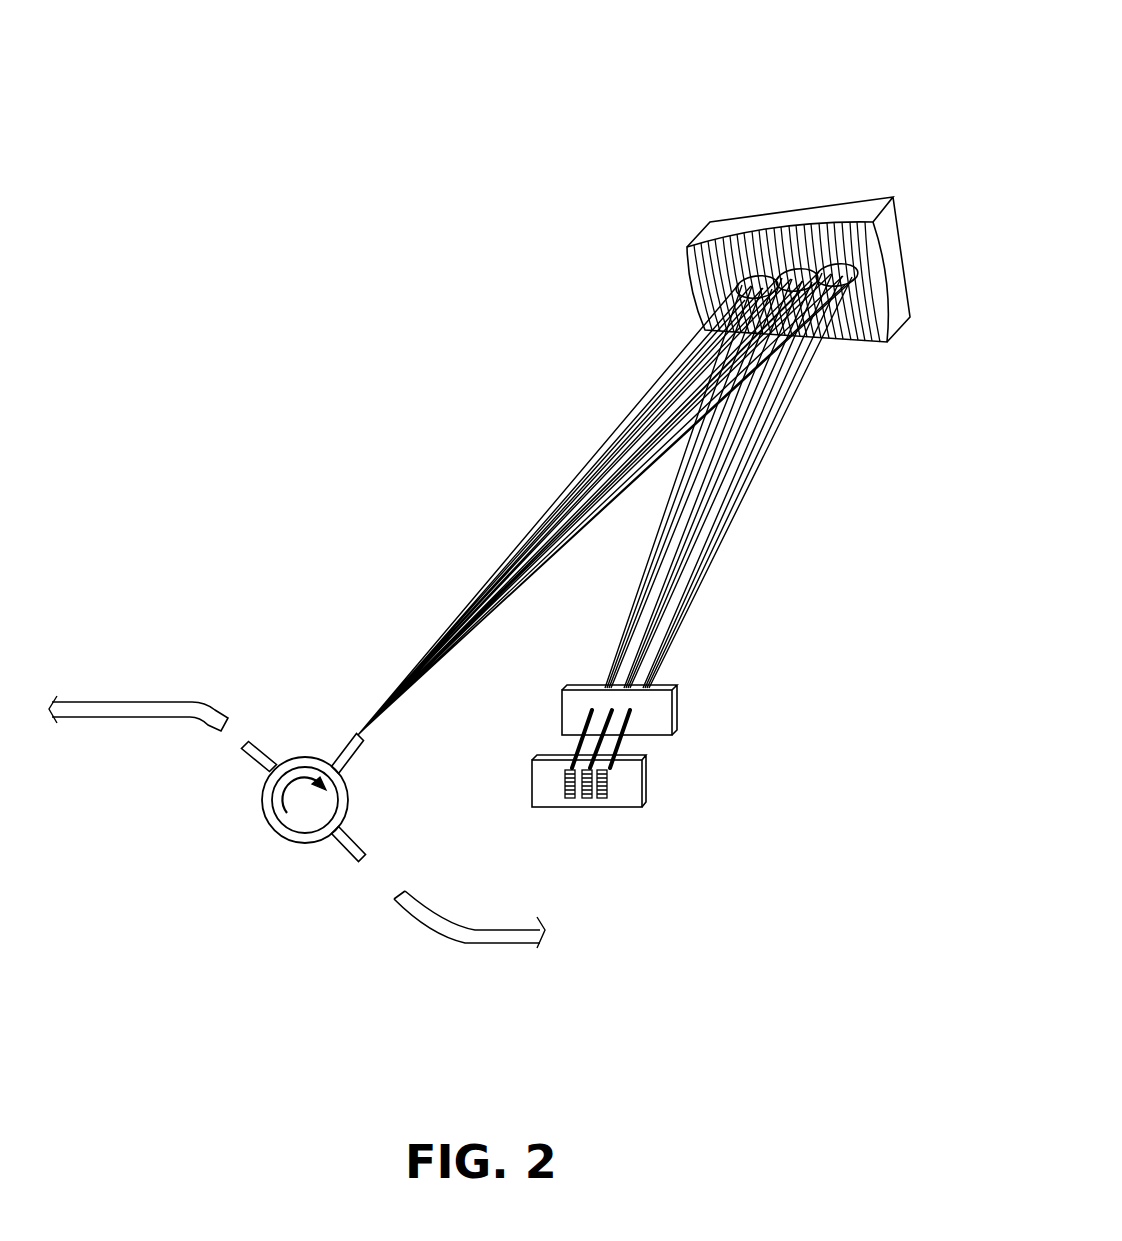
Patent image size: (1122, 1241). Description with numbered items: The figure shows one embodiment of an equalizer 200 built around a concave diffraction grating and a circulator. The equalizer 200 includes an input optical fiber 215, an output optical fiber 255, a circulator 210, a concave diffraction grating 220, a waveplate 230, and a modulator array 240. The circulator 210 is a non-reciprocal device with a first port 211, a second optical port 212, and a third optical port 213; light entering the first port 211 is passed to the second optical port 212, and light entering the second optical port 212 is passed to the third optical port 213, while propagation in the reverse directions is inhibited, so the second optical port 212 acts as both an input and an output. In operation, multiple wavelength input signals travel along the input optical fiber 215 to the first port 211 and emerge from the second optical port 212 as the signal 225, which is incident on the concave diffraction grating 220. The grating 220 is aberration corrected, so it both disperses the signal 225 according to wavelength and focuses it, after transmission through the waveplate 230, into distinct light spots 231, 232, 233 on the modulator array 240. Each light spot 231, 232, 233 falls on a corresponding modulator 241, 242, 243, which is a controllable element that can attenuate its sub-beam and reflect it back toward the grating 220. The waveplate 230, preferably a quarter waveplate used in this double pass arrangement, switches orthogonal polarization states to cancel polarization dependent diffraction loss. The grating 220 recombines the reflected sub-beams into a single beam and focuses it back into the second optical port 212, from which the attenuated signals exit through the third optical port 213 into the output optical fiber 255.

The equalizer 200 is at (683, 102).
The circulator 210 is at (270, 830).
The first port 211 is at (263, 753).
The second optical port 212 is at (347, 760).
The third optical port 213 is at (337, 848).
The input optical fiber 215 is at (100, 700).
The concave diffraction grating 220 is at (725, 227).
The signal 225 is at (561, 478).
The waveplate 230 is at (676, 708).
The light spot 231 is at (590, 712).
The light spot 232 is at (603, 710).
The light spot 233 is at (618, 750).
The modulator array 240 is at (646, 787).
The modulator 241 is at (572, 810).
The modulator 242 is at (585, 810).
The modulator 243 is at (608, 810).
The output optical fiber 255 is at (441, 943).